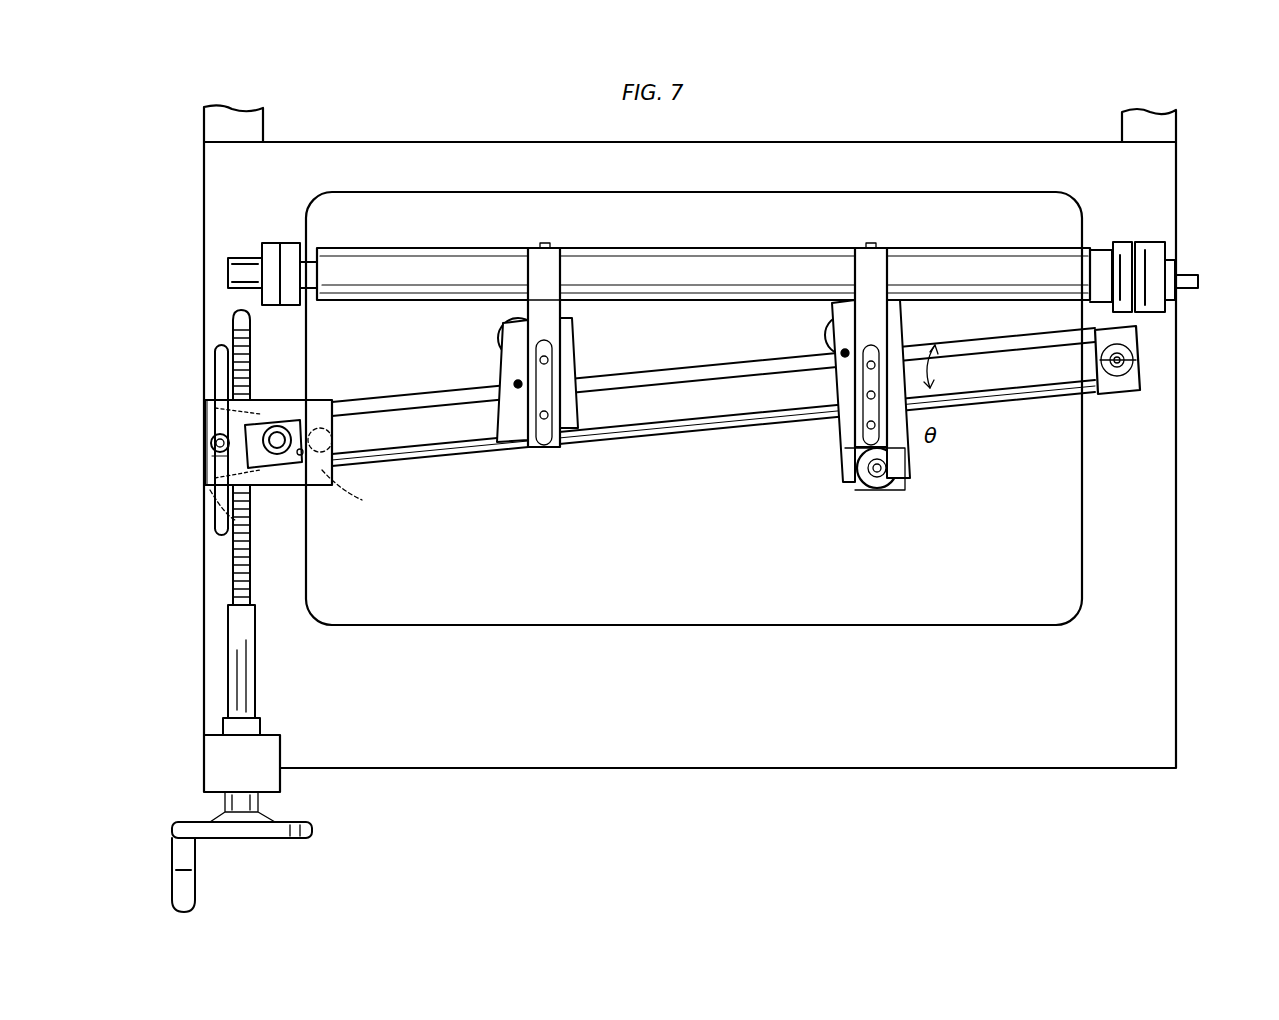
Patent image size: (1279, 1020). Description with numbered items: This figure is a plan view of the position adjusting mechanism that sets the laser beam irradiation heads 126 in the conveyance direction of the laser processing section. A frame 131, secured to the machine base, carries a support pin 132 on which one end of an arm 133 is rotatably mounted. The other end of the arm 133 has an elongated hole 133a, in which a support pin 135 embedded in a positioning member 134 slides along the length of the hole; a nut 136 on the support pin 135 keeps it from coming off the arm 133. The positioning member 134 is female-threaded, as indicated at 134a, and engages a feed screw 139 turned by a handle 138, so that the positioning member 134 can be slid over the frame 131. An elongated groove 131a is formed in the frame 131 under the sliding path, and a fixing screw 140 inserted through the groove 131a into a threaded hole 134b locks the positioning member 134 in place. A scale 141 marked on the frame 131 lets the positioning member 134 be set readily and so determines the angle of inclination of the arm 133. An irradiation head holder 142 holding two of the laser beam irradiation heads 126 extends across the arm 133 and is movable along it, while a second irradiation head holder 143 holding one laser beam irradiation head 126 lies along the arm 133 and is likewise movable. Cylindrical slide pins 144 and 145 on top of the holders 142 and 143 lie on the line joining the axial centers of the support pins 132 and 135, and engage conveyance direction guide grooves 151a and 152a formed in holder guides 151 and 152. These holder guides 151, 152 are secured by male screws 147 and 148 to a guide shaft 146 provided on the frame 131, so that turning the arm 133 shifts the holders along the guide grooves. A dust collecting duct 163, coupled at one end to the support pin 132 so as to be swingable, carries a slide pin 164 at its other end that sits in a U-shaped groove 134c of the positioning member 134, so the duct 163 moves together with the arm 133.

The laser beam irradiation heads 126 is at (505, 336).
The frame 131 is at (1145, 458).
The elongated groove 131a is at (218, 368).
The support pin 132 is at (1130, 362).
The arm 133 is at (1000, 385).
The elongated hole 133a is at (255, 440).
The positioning member 134 is at (210, 474).
The female thread 134a is at (210, 490).
The threaded hole 134b is at (215, 460).
The U-shaped groove 134c is at (325, 455).
The support pin 135 is at (262, 450).
The nut 136 is at (285, 450).
The handle 138 is at (185, 880).
The feed screw 139 is at (235, 555).
The fixing screw 140 is at (212, 443).
The scale 141 is at (240, 355).
The irradiation head holder 142 is at (842, 395).
The irradiation head holder 143 is at (575, 360).
The slide pin 144 is at (860, 420).
The slide pin 145 is at (548, 400).
The guide shaft 146 is at (735, 265).
The male screw 147 is at (872, 244).
The male screw 148 is at (545, 244).
The holder guide 151 is at (892, 320).
The conveyance direction guide groove 151a is at (795, 425).
The holder guide 152 is at (552, 308).
The conveyance direction guide groove 152a is at (520, 395).
The dust collecting duct 163 is at (425, 455).
The slide pin 164 is at (350, 445).